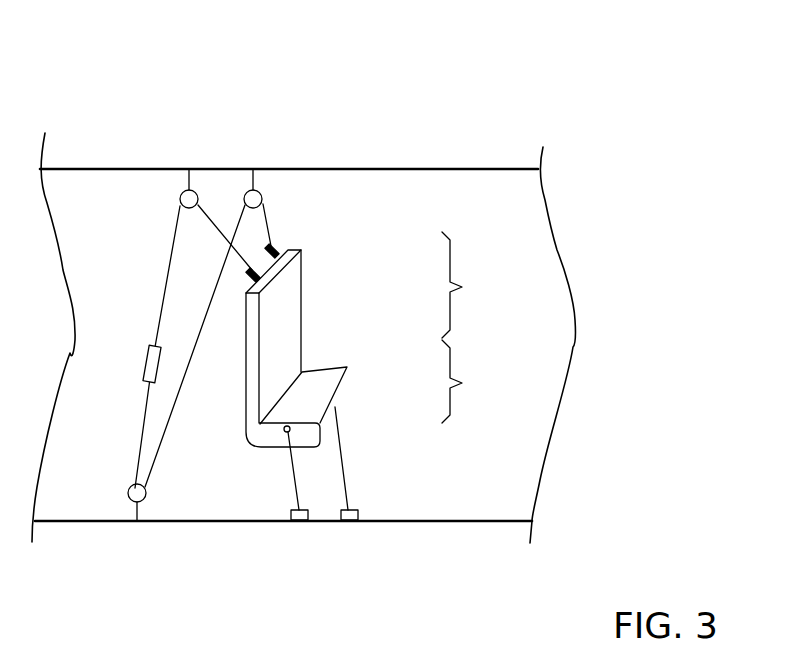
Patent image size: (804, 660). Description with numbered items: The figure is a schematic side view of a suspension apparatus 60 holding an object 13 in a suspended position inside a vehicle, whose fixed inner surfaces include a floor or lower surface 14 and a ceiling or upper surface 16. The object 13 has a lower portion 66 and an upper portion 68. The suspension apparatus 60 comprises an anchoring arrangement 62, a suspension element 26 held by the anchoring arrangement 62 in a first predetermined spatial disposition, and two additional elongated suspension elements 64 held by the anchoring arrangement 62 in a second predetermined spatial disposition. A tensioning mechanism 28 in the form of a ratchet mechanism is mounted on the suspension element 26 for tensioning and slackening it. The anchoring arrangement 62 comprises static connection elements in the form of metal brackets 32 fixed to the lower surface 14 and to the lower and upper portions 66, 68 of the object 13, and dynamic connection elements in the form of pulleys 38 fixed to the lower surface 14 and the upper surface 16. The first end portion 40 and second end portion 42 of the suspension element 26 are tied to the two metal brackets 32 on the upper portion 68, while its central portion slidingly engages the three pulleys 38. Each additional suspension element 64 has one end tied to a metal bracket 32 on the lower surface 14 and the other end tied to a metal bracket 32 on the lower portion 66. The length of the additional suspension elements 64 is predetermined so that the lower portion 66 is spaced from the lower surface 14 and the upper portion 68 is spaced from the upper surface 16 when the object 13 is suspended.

The object 13 is at (305, 392).
The lower surface 14 is at (460, 523).
The upper surface 16 is at (423, 167).
The suspension element 26 is at (167, 270).
The tensioning mechanism 28 is at (143, 360).
The metal brackets 32 is at (259, 272).
The pulleys 38 is at (181, 200).
The first end portion 40 is at (274, 247).
The second end portion 42 is at (247, 284).
The suspension apparatus 60 is at (392, 131).
The anchoring arrangement 62 is at (183, 149).
The additional elongated suspension elements 64 is at (343, 455).
The lower portion 66 is at (473, 381).
The upper portion 68 is at (474, 285).